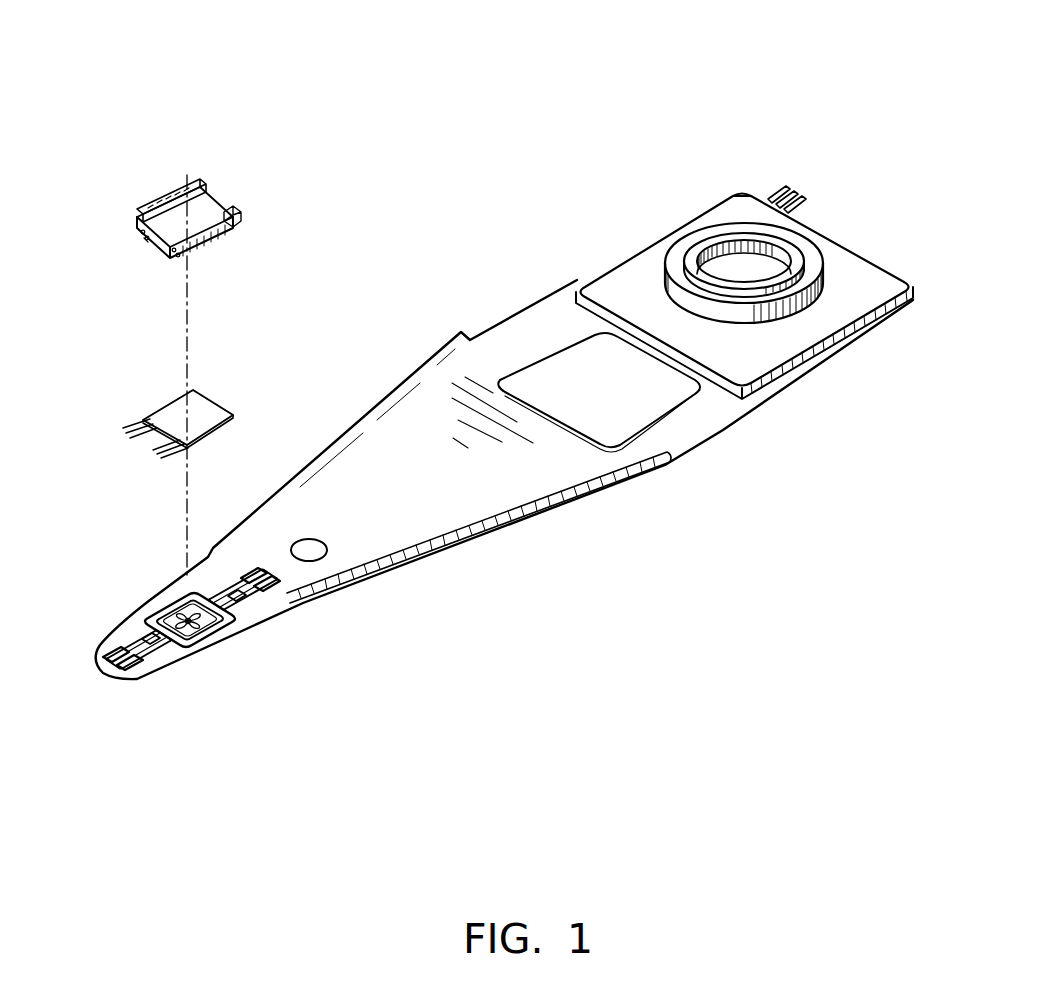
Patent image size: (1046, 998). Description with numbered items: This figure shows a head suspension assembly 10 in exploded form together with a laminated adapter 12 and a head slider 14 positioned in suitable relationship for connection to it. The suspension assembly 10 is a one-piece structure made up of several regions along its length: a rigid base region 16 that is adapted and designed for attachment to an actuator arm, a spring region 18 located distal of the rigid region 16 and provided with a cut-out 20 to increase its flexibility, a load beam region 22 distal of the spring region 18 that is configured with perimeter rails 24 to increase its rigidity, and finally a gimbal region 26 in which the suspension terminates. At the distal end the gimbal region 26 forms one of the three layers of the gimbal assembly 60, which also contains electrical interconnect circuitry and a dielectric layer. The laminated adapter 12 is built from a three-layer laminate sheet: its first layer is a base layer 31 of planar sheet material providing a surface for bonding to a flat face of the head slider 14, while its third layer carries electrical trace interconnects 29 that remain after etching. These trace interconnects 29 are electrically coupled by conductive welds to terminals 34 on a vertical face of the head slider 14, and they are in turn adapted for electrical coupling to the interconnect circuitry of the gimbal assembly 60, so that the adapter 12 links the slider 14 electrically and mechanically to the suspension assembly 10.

The suspension assembly 10 is at (565, 137).
The laminated adapter 12 is at (237, 378).
The head slider 14 is at (205, 205).
The rigid base region 16 is at (817, 370).
The spring region 18 is at (697, 450).
The cut-out 20 is at (613, 408).
The load beam region 22 is at (485, 492).
The perimeter rails 24 is at (298, 488).
The gimbal region 26 is at (227, 643).
The electrical trace interconnects 29 is at (133, 430).
The base layer 31 is at (177, 413).
The terminals 34 is at (145, 235).
The gimbal assembly 60 is at (157, 664).